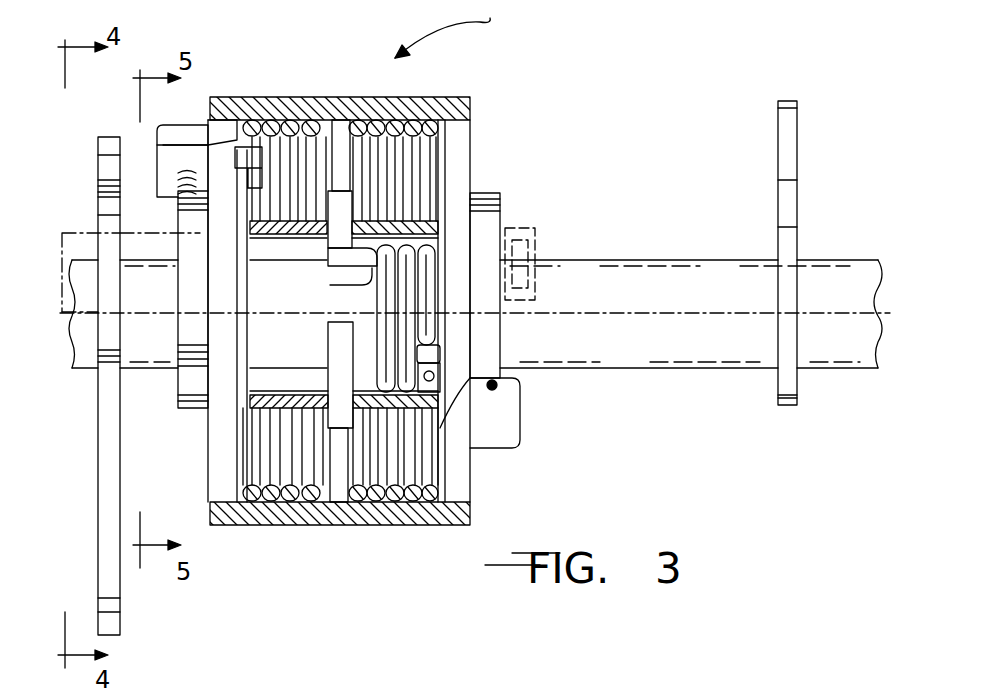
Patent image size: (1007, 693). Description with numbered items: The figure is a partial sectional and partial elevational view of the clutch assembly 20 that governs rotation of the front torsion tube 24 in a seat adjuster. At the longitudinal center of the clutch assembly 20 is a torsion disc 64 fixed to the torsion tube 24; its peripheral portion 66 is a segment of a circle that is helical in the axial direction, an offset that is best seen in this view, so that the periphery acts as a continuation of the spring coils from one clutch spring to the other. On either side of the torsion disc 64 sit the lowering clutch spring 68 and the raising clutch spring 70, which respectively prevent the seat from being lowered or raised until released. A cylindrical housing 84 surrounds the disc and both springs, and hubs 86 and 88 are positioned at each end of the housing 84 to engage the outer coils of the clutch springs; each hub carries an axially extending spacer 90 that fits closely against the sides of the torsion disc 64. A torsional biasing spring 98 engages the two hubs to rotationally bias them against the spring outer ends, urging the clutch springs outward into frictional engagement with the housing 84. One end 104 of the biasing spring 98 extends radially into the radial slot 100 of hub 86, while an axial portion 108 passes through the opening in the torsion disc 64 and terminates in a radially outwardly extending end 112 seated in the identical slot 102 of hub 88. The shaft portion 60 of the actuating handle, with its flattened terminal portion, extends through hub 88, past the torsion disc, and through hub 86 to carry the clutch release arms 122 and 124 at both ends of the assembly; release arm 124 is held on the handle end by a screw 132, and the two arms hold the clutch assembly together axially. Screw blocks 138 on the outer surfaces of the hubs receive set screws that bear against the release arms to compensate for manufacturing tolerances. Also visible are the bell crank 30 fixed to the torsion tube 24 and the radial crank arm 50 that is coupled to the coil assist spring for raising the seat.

The clutch assembly 20 is at (460, 31).
The front torsion tube 24 is at (700, 372).
The bell crank 30 is at (120, 618).
The radial crank arm 50 is at (778, 160).
The shaft portion 60 is at (78, 232).
The torsion disc 64 is at (326, 362).
The peripheral portion 66 is at (352, 505).
The lowering clutch spring 68 is at (400, 505).
The raising clutch spring 70 is at (272, 160).
The cylindrical housing 84 is at (435, 98).
The hub 86 is at (470, 152).
The hub 88 is at (208, 445).
The spacer 90 is at (215, 405).
The torsional biasing spring 98 is at (372, 276).
The radial slot 100 is at (520, 420).
The radial slot 102 is at (215, 128).
The end of biasing spring 104 is at (438, 372).
The axial portion 108 is at (320, 125).
The radially outwardly extending end 112 is at (158, 165).
The clutch release arm 122 is at (180, 342).
The clutch release arm 124 is at (500, 215).
The screw 132 is at (540, 284).
The screw block 138 is at (160, 135).